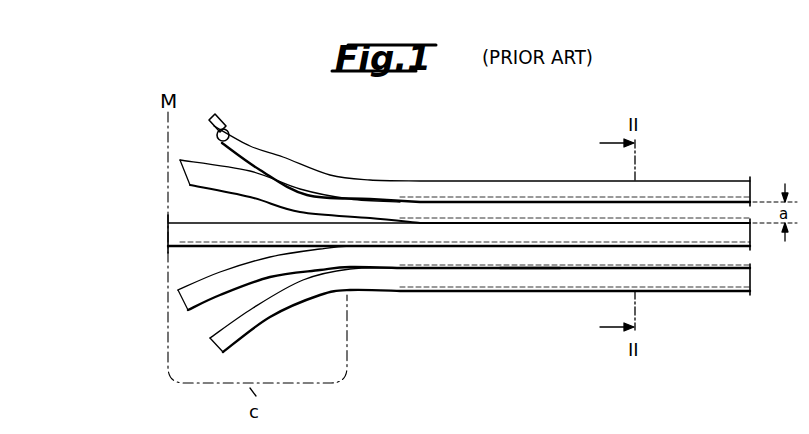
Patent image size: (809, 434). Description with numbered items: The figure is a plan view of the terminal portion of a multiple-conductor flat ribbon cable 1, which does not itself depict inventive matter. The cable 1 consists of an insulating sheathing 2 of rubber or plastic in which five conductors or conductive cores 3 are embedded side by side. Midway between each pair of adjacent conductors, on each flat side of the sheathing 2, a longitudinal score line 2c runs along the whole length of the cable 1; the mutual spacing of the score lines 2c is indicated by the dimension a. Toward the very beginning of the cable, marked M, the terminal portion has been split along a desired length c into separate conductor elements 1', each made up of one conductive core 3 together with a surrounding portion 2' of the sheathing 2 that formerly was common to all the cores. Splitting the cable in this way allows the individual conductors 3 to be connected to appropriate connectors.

The multiple-conductor flat ribbon cable 1 is at (733, 199).
The conductor element 1' is at (437, 235).
The insulating sheathing 2 is at (480, 306).
The surrounding portion of the sheathing 2' is at (482, 156).
The longitudinal score line 2c is at (514, 247).
The conductive core 3 is at (221, 118).